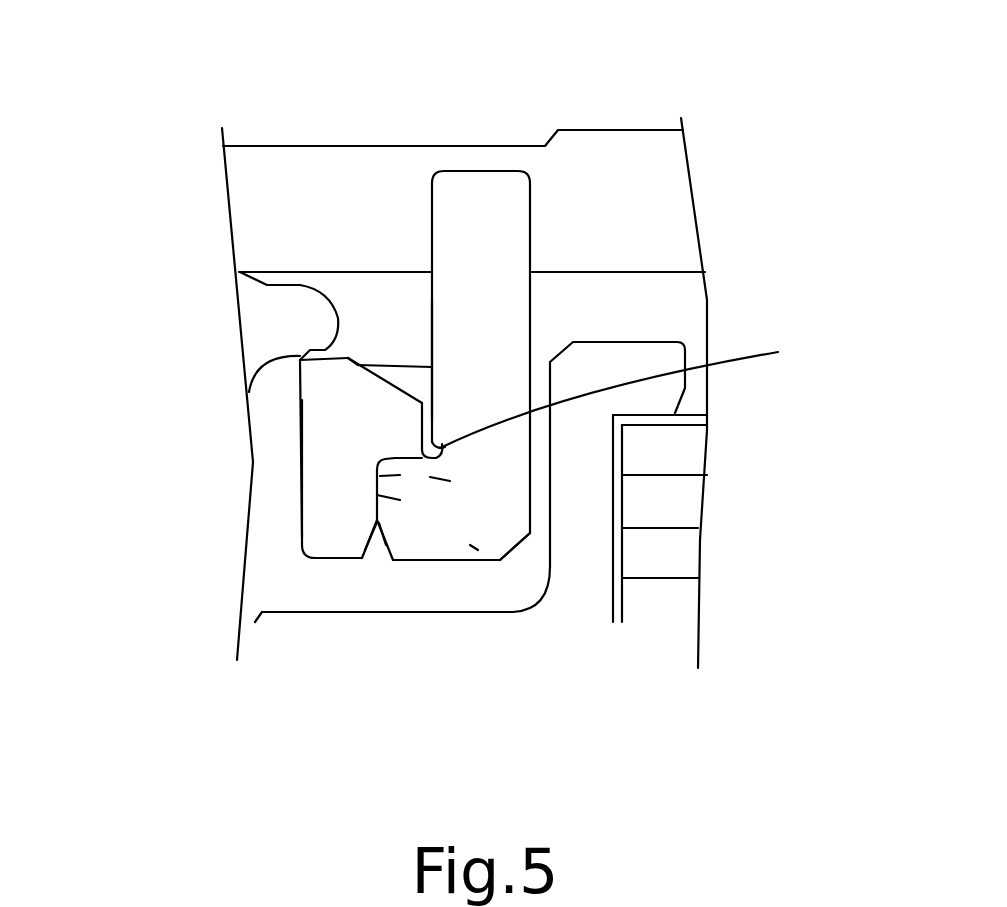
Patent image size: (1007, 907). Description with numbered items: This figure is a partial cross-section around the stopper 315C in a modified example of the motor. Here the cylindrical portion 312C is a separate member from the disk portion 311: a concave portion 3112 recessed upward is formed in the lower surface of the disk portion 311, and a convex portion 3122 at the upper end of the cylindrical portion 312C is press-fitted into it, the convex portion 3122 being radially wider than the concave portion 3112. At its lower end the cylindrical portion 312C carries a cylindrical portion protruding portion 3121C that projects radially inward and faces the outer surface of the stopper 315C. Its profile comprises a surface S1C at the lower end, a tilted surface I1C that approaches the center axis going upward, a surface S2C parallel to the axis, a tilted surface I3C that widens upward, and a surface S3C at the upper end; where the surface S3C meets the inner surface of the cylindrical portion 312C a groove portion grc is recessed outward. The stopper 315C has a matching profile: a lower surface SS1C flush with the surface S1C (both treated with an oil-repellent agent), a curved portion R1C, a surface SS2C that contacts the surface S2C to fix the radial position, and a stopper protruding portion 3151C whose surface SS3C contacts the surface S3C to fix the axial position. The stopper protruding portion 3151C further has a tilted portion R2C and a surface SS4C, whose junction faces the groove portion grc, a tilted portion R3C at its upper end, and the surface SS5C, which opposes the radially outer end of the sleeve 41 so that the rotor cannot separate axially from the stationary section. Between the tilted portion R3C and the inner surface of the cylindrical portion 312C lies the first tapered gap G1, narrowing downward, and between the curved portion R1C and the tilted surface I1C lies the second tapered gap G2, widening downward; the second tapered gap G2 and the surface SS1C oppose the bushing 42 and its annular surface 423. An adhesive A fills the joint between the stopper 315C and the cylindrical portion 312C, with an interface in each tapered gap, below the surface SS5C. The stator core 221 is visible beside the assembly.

The disk portion 311 is at (265, 178).
The sleeve 41 is at (268, 322).
The convex portion 3122 is at (485, 170).
The concave portion 3112 is at (533, 184).
The cylindrical portion 312C is at (508, 225).
The stopper protruding portion 3151C is at (389, 396).
The surface SS5C is at (330, 358).
The tilted portion R3C is at (383, 370).
The first tapered gap G1 is at (405, 367).
The surface SS4C is at (420, 425).
The tilted portion R2C is at (422, 445).
The groove portion grc is at (623, 395).
The surface SS3C is at (395, 458).
The surface SS2C is at (377, 495).
The curved portion R1C is at (305, 523).
The surface SS1C is at (327, 560).
The adhesive A is at (382, 545).
The second tapered gap G2 is at (375, 540).
The annular surface 423 is at (403, 560).
The tilted surface I1C is at (380, 520).
The surface S1C is at (480, 542).
The cylindrical portion protruding portion 3121C is at (518, 565).
The stopper 315C is at (331, 542).
The bushing 42 is at (555, 613).
The stator core 221 is at (660, 602).
The surface S3C is at (380, 476).
The tilted surface I3C is at (430, 477).
The surface S2C is at (377, 495).